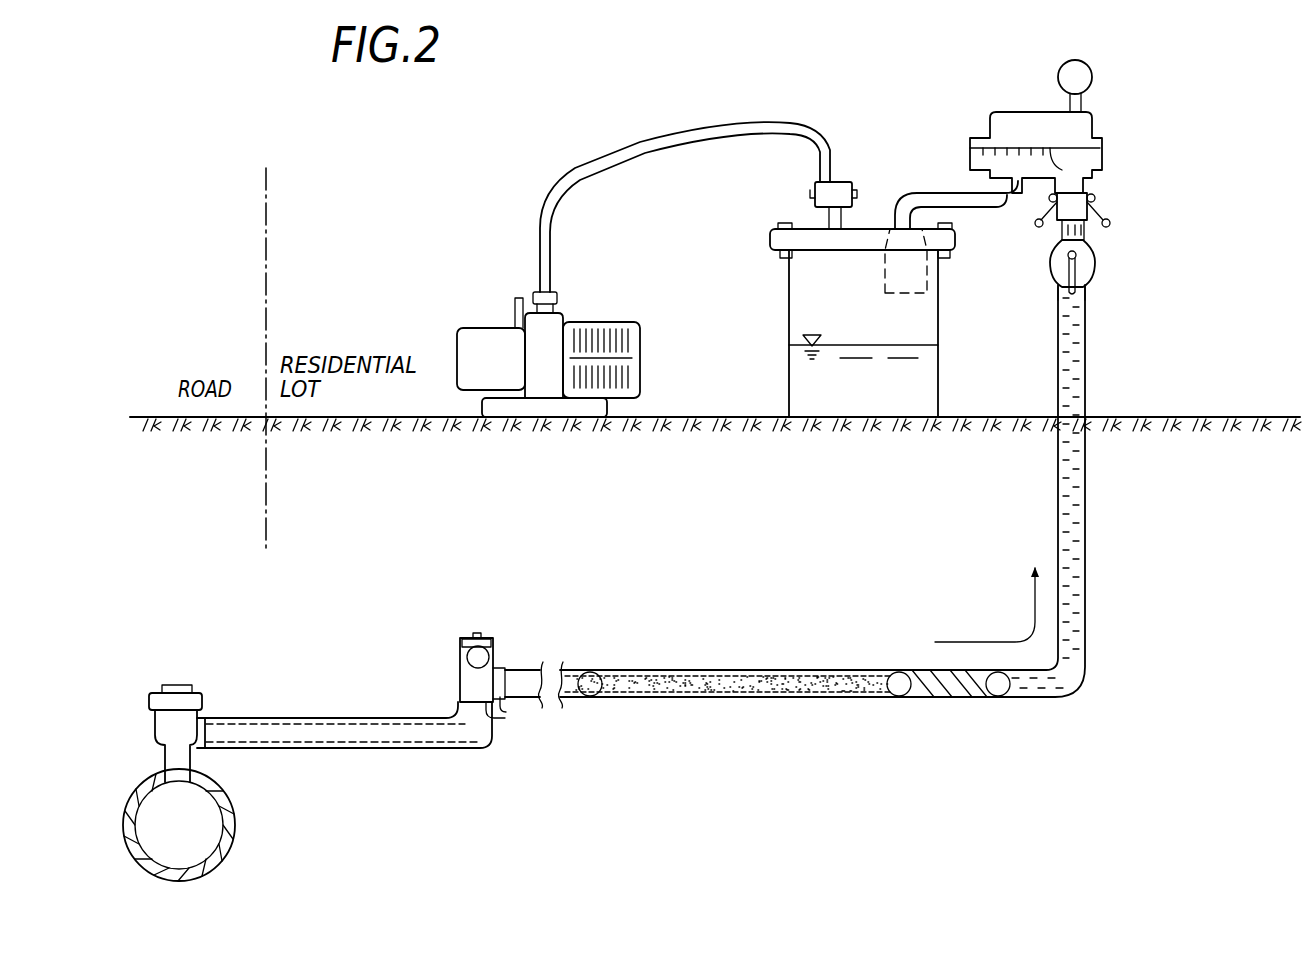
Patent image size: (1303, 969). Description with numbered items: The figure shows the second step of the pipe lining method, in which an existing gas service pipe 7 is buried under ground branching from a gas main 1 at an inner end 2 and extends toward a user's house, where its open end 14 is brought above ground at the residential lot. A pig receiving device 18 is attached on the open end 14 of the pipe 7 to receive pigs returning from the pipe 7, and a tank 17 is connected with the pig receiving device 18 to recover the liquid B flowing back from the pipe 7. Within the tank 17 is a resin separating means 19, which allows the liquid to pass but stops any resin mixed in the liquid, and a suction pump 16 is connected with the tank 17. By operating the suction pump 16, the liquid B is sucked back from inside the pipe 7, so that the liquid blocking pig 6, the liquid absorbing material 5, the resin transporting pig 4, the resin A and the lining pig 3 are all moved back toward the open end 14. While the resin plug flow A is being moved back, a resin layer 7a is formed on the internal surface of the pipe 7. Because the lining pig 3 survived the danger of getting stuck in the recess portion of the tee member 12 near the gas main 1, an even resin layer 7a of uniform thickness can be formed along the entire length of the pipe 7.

The gas main 1 is at (230, 848).
The inner end 2 is at (210, 715).
The lining pig 3 is at (468, 658).
The resin transporting pig 4 is at (900, 688).
The liquid absorbing material 5 is at (922, 677).
The liquid blocking pig 6 is at (998, 688).
The gas service pipe 7 is at (230, 718).
The resin layer 7a is at (380, 749).
The tee member 12 is at (504, 710).
The open end 14 is at (1083, 290).
The suction pump 16 is at (474, 283).
The tank 17 is at (871, 195).
The pig receiving device 18 is at (1080, 128).
The resin separating means 19 is at (938, 289).
The resin A is at (708, 675).
The liquid B is at (1082, 518).